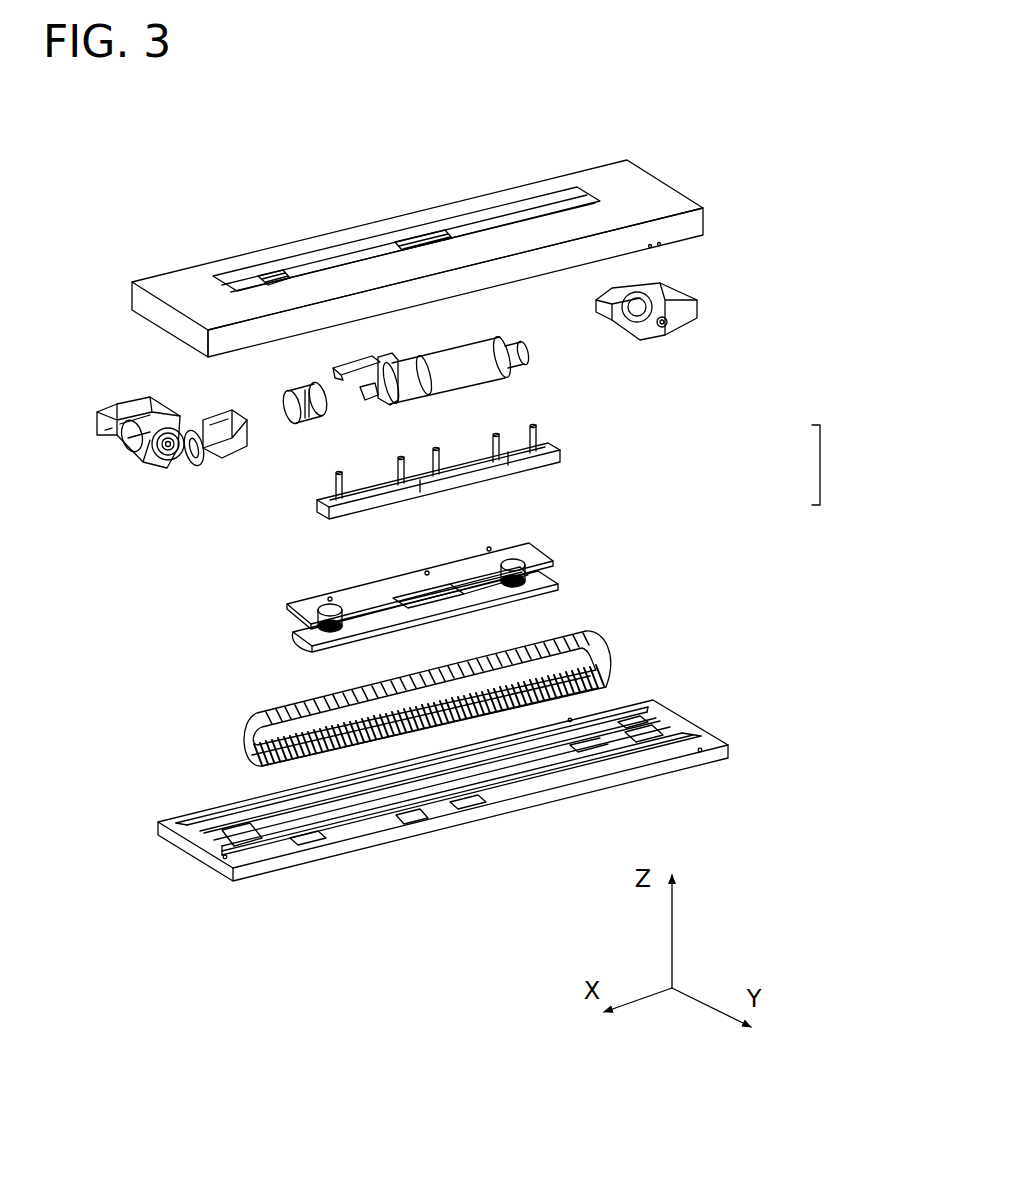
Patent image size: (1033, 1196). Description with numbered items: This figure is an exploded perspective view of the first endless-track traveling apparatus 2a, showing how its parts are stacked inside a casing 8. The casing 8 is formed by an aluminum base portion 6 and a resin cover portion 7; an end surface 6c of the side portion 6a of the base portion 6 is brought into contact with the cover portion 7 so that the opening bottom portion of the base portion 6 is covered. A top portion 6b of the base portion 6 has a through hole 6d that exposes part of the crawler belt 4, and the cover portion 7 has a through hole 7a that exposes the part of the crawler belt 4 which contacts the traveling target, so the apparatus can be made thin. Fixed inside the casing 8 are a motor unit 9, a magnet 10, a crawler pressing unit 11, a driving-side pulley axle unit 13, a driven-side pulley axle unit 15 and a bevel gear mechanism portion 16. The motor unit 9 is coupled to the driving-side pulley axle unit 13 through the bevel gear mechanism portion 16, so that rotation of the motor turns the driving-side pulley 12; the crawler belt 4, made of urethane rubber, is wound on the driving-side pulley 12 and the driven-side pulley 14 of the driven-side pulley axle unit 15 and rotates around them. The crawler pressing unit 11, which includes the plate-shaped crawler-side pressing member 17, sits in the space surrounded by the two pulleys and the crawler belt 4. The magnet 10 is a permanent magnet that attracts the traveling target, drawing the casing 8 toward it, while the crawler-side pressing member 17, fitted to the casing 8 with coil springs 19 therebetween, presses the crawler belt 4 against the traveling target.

The first endless-track traveling apparatus 2a is at (514, 151).
The crawler belt 4 is at (245, 728).
The base portion 6 is at (705, 223).
The side portion 6a is at (514, 271).
The top portion 6b is at (198, 288).
The end surface 6c is at (305, 338).
The through hole 6d is at (320, 266).
The cover portion 7 is at (693, 720).
The through hole 7a is at (485, 771).
The casing 8 is at (820, 465).
The motor unit 9 is at (349, 426).
The magnet 10 is at (580, 433).
The crawler pressing unit 11 is at (553, 542).
The driving-side pulley 12 is at (135, 402).
The driving-side pulley axle unit 13 is at (146, 478).
The driven-side pulley 14 is at (613, 312).
The driven-side pulley axle unit 15 is at (658, 351).
The bevel gear mechanism portion 16 is at (205, 468).
The crawler-side pressing member 17 is at (578, 601).
The coil springs 19 is at (295, 636).